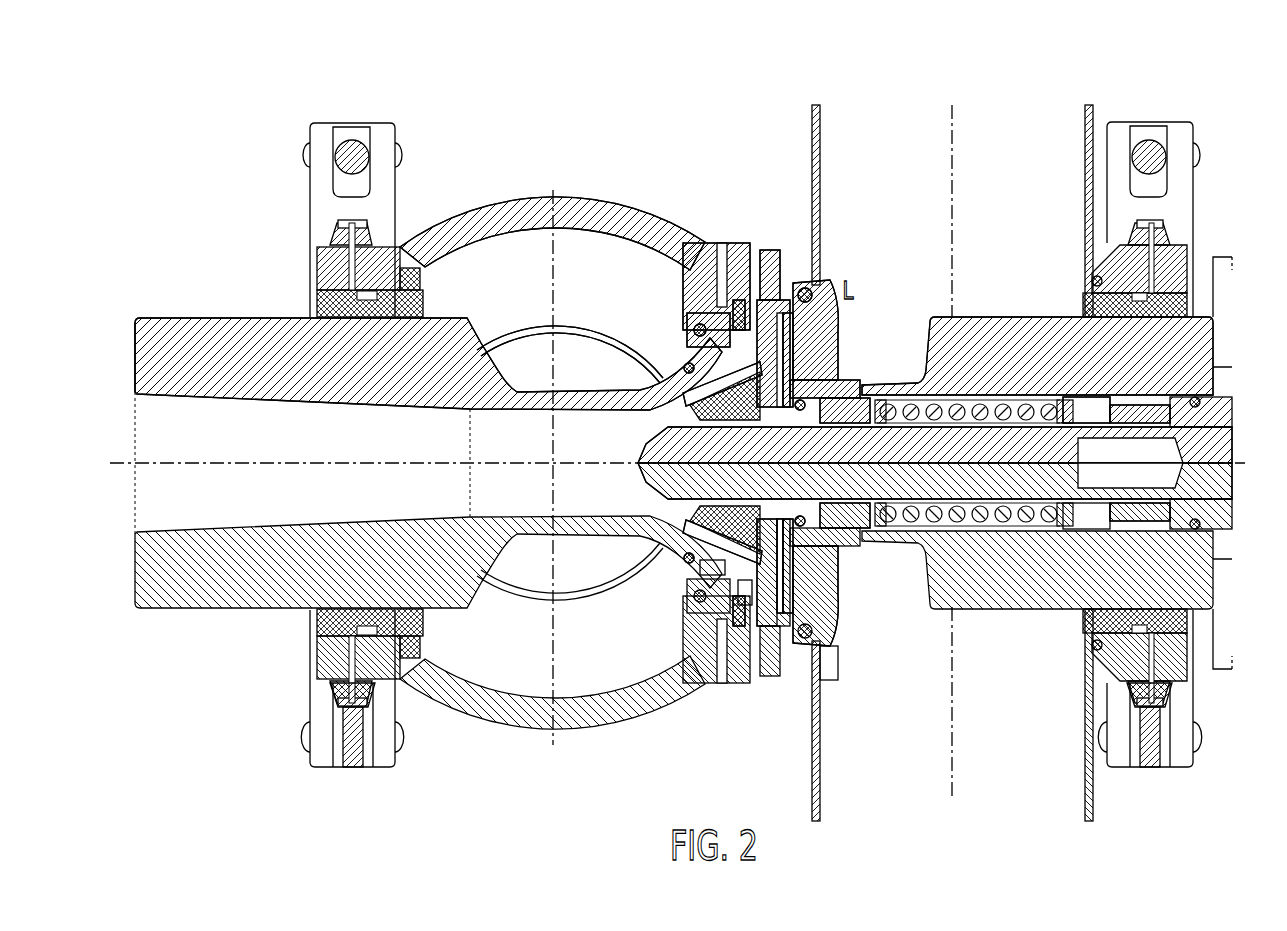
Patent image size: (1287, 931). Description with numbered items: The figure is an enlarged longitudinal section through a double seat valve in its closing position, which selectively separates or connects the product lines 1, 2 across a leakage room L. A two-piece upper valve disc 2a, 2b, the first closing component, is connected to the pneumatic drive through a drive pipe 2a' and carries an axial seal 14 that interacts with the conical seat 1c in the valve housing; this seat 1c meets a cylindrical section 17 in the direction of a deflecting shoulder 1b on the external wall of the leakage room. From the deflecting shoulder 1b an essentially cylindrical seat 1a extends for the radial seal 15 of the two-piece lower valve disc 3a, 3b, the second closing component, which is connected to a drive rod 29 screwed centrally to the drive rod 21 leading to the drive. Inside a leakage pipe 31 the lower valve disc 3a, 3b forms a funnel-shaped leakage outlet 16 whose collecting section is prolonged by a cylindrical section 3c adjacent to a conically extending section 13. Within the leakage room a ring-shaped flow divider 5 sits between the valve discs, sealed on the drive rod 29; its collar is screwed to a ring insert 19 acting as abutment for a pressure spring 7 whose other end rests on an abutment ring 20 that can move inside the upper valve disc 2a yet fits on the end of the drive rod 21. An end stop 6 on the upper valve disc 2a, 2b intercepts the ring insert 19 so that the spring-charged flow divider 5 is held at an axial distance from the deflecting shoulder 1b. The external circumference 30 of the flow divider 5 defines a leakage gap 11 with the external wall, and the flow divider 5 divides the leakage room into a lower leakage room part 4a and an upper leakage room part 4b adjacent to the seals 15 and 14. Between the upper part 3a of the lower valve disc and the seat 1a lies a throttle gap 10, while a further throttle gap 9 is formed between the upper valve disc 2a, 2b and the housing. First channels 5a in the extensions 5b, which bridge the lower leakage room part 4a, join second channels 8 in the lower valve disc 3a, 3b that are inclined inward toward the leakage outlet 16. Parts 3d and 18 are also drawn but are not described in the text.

The product line 1 is at (570, 193).
The cylindrical seat 1a is at (718, 318).
The deflecting shoulder 1b is at (753, 330).
The seat 1c is at (785, 320).
The product line 2 is at (990, 287).
The upper valve disc 2a is at (870, 216).
The drive pipe 2a' is at (912, 713).
The upper valve disc 2b is at (822, 300).
The lower valve disc 3a is at (737, 320).
The lower valve disc 3b is at (685, 335).
The cylindrical section 3c is at (518, 433).
The seat carrier 3d is at (703, 322).
The lower leakage room part 4a is at (750, 655).
The upper leakage room part 4b is at (783, 603).
The flow divider 5 is at (803, 605).
The first channels 5a is at (708, 550).
The extensions 5b is at (697, 570).
The end stop 6 is at (862, 512).
The pressure spring 7 is at (900, 518).
The second channels 8 is at (725, 575).
The throttle gap 9 is at (800, 345).
The throttle gap 10 is at (748, 603).
The leakage gap 11 is at (770, 617).
The conically extending section 13 is at (243, 417).
The seal 14 is at (830, 665).
The radial seal 15 is at (742, 248).
The leakage outlet 16 is at (670, 397).
The cylindrical section 17 is at (782, 250).
The seal ring 18 is at (848, 385).
The ring insert 19 is at (870, 395).
The abutment ring 20 is at (1067, 405).
The drive rod 21 is at (1082, 498).
The drive rod 29 is at (666, 481).
The external circumference 30 is at (745, 665).
The leakage pipe 31 is at (162, 322).